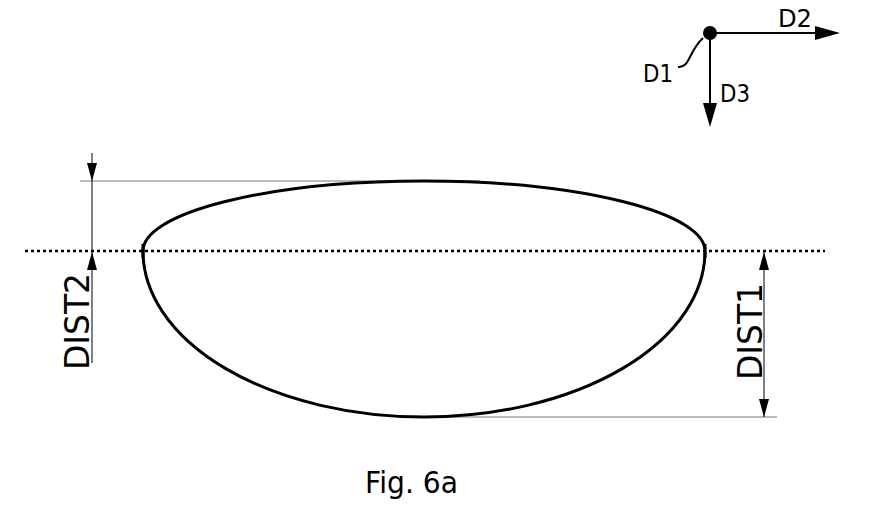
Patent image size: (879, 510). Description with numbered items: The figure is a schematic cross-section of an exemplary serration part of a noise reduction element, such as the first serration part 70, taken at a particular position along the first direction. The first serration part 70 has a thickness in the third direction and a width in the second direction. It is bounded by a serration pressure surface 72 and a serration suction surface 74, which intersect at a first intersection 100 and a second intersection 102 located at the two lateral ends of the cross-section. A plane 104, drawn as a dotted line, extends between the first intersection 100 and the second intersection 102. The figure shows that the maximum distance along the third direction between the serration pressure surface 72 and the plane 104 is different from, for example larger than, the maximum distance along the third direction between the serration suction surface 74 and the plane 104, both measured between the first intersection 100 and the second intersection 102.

The first serration part 70 is at (433, 225).
The serration pressure surface 72 is at (490, 416).
The serration suction surface 74 is at (447, 182).
The first intersection 100 is at (703, 251).
The second intersection 102 is at (143, 251).
The plane 104 is at (765, 251).